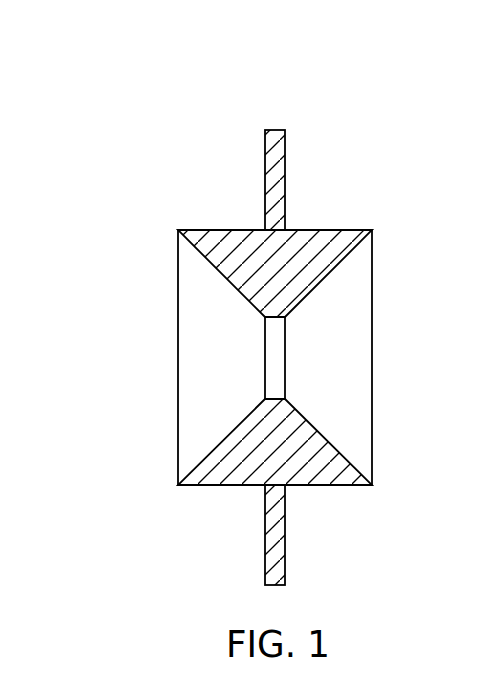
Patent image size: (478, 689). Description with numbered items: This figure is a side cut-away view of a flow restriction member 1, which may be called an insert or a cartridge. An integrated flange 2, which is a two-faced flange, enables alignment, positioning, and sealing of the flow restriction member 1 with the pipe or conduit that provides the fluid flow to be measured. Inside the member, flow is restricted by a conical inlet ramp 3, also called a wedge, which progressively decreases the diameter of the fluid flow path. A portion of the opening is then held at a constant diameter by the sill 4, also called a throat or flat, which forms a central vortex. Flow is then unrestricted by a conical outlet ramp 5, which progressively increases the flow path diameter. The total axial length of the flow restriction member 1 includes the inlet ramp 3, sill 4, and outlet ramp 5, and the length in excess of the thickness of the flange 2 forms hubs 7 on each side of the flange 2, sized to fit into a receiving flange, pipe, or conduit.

The flow restriction member 1 is at (317, 126).
The integrated flange 2 is at (331, 537).
The conical inlet ramp 3 is at (372, 357).
The sill 4 is at (362, 386).
The conical outlet ramp 5 is at (180, 357).
The hubs 7 is at (249, 237).